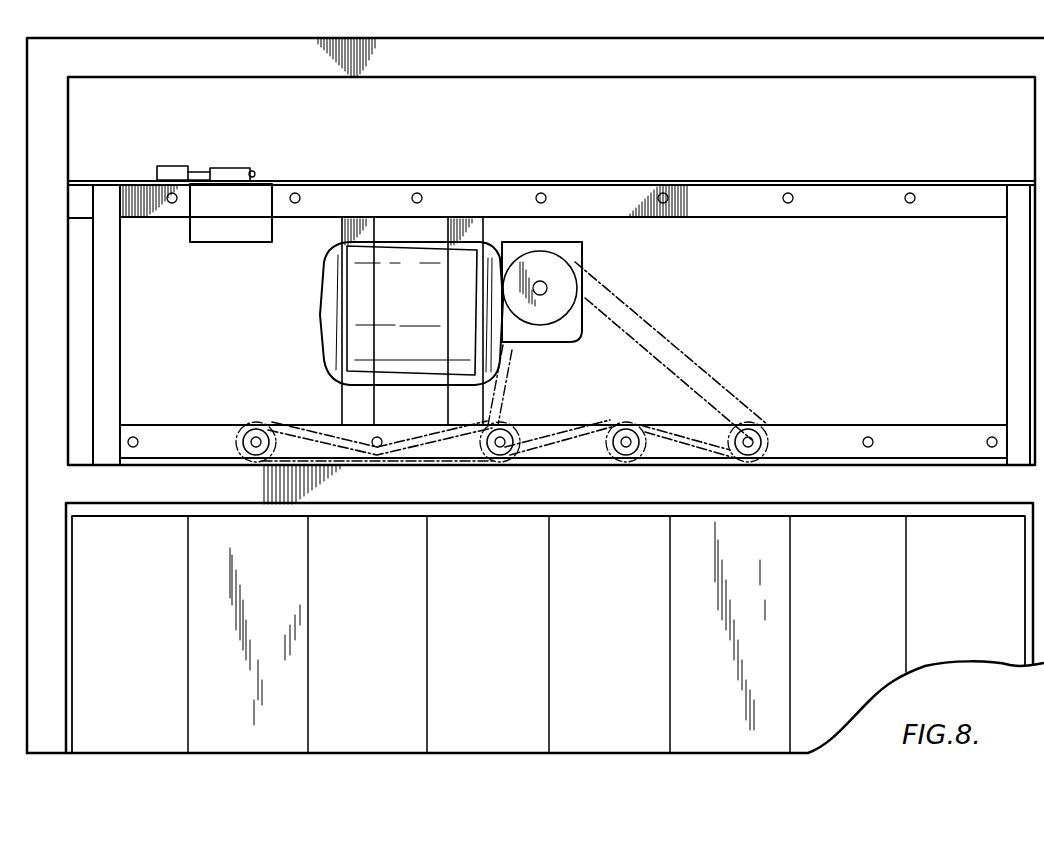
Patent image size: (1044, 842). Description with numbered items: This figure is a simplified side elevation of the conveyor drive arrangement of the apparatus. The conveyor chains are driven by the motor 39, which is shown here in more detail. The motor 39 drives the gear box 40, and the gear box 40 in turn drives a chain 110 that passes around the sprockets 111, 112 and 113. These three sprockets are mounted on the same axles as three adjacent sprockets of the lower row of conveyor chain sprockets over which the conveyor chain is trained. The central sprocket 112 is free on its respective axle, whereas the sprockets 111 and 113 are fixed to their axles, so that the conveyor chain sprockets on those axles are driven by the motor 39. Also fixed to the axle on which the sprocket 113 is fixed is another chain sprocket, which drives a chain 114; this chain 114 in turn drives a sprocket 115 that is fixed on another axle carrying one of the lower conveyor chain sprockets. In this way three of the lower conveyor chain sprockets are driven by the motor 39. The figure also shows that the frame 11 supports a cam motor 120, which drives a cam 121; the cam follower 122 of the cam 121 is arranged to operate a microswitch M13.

The frame 11 is at (357, 198).
The motor 39 is at (335, 315).
The gear box 40 is at (578, 252).
The chain 110 is at (727, 393).
The sprocket 111 is at (748, 456).
The central sprocket 112 is at (626, 456).
The sprocket 113 is at (497, 456).
The chain 114 is at (315, 433).
The sprocket 115 is at (245, 432).
The cam motor 120 is at (221, 232).
The cam 121 is at (250, 172).
The cam follower 122 is at (205, 173).
The microswitch M13 is at (158, 172).